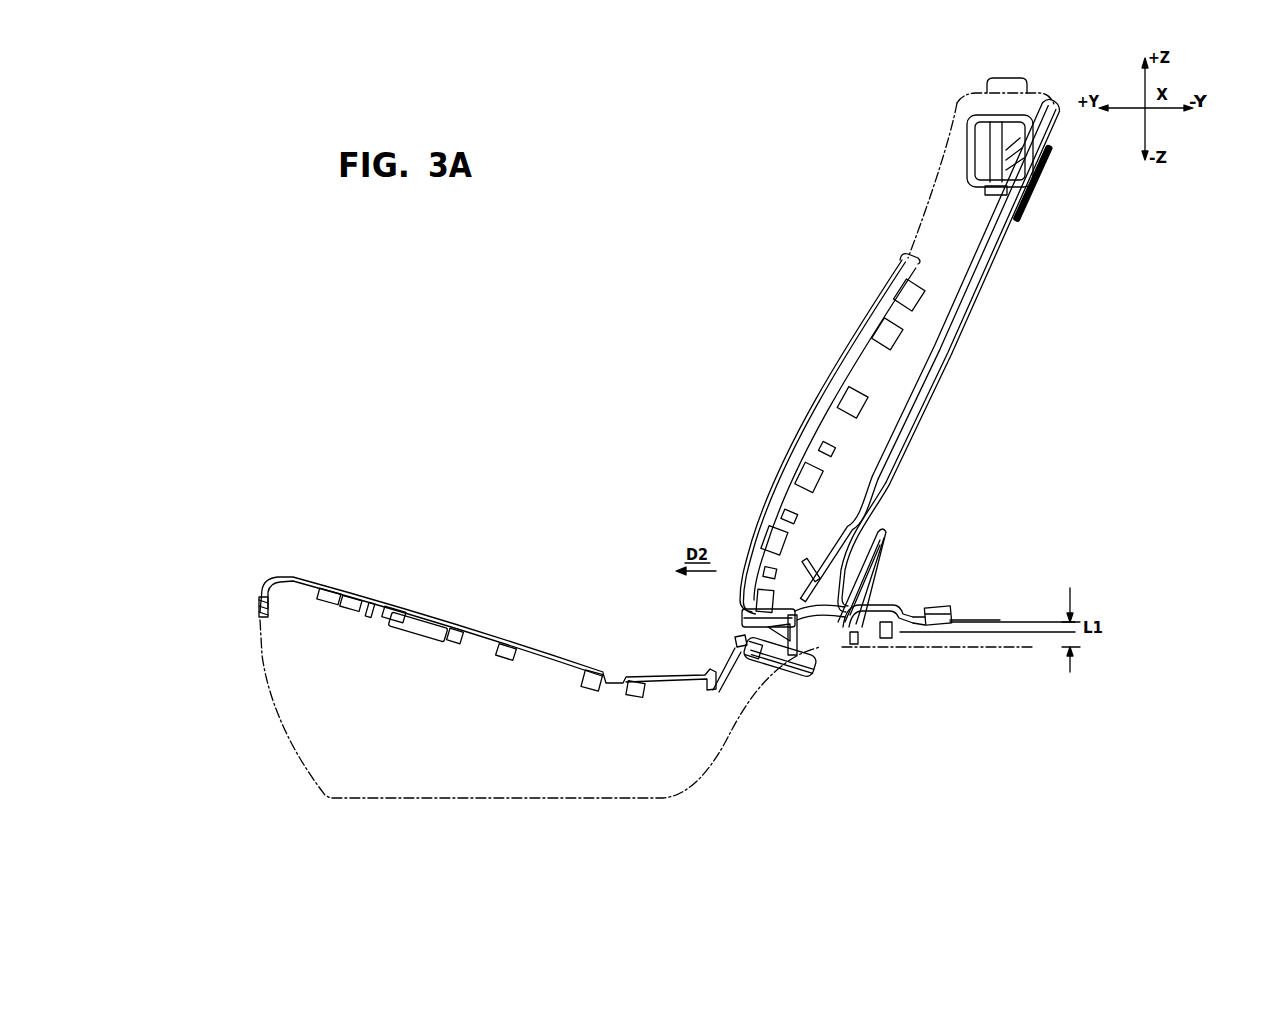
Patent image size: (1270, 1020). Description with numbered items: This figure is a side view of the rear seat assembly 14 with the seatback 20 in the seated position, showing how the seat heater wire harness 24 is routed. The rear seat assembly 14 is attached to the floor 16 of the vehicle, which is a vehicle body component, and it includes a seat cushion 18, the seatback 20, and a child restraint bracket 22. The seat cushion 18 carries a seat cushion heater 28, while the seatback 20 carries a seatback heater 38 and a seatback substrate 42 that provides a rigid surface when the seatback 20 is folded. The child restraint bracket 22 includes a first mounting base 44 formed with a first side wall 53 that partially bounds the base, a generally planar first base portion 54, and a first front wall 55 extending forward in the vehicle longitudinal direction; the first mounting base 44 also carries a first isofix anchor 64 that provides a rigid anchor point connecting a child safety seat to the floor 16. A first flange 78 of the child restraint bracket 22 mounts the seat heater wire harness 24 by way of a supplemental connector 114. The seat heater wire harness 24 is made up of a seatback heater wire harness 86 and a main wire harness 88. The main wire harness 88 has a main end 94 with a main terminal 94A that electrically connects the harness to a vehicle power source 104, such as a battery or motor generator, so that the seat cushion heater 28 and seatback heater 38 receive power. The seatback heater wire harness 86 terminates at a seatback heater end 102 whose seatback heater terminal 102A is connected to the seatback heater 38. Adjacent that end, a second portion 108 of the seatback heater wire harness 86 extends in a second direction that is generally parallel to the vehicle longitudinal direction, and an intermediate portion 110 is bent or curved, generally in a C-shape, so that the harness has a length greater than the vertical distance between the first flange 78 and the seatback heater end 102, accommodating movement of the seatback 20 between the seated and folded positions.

The rear seat assembly 14 is at (859, 192).
The floor 16 is at (1010, 650).
The seat cushion 18 is at (250, 690).
The seatback 20 is at (1022, 228).
The child restraint bracket 22 is at (801, 673).
The seat heater wire harness 24 is at (918, 607).
The seat cushion heater 28 is at (462, 606).
The seatback heater 38 is at (873, 305).
The seatback substrate 42 is at (965, 310).
The first mounting base 44 is at (745, 665).
The first side wall 53 is at (809, 658).
The first base portion 54 is at (797, 682).
The first front wall 55 is at (762, 686).
The first isofix anchor 64 is at (733, 653).
The first flange 78 is at (866, 628).
The seatback heater wire harness 86 is at (893, 530).
The main wire harness 88 is at (893, 625).
The main end 94 is at (940, 607).
The main terminal 94A is at (952, 608).
The seatback heater end 102 is at (801, 616).
The seatback heater terminal 102A is at (745, 623).
The vehicle power source 104 is at (958, 617).
The second portion 108 is at (813, 614).
The intermediate portion 110 is at (890, 543).
The supplemental connector 114 is at (860, 641).